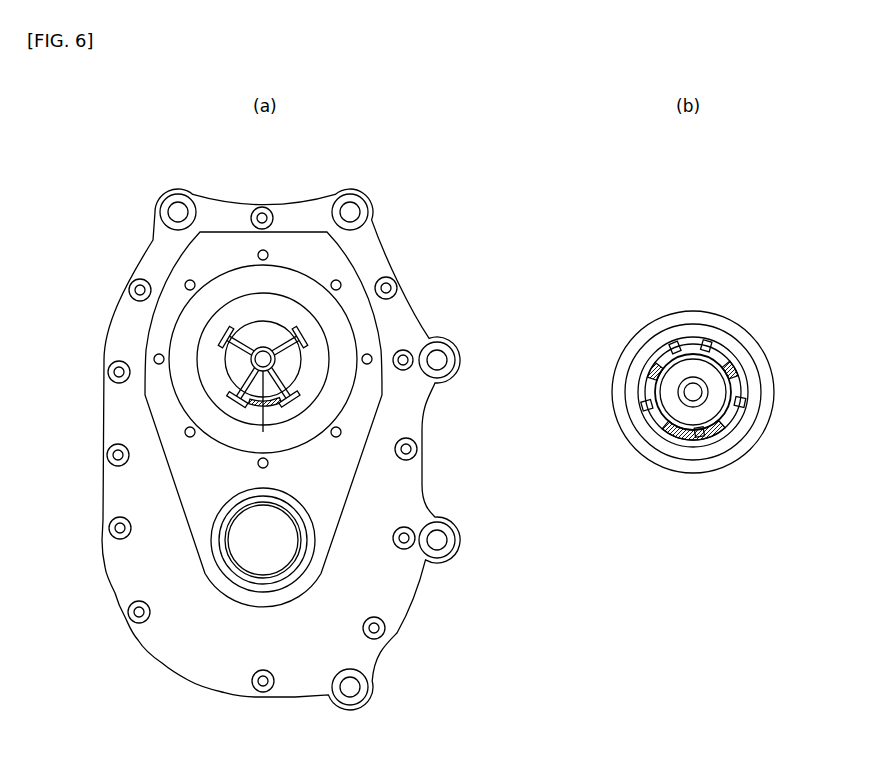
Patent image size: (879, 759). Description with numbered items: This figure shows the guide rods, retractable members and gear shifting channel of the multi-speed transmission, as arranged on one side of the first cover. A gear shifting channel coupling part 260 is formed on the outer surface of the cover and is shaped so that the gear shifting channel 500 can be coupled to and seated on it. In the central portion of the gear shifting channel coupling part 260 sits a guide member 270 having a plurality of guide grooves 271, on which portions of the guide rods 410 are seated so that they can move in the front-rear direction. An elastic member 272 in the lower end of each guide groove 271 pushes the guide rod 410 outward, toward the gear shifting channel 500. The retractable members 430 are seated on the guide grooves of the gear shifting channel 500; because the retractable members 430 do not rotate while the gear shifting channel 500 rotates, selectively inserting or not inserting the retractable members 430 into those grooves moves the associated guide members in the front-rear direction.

The gear shifting channel coupling part 260 is at (240, 305).
The guide member 270 is at (264, 347).
The guide grooves 271 is at (232, 386).
The elastic member 272 is at (248, 360).
The guide rods 410 is at (315, 297).
The retractable members 430 is at (306, 332).
The gear shifting channel 500 is at (692, 312).